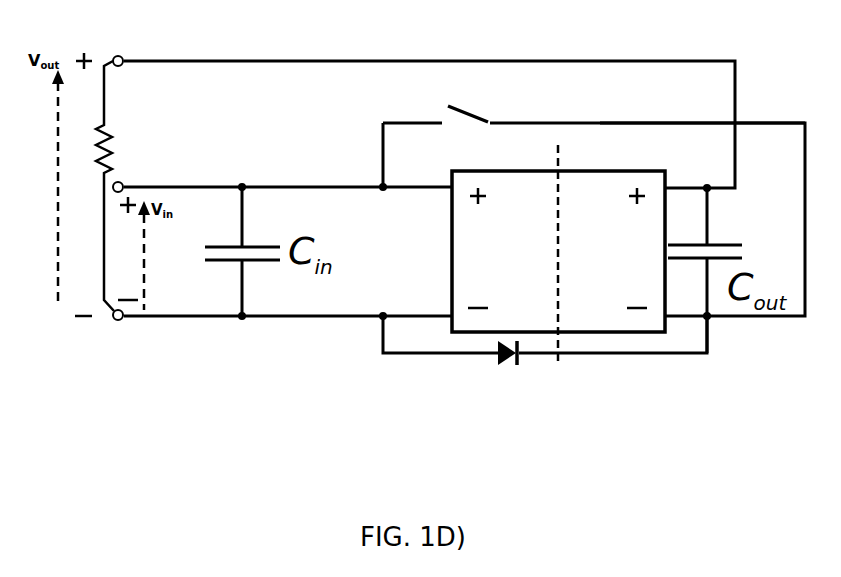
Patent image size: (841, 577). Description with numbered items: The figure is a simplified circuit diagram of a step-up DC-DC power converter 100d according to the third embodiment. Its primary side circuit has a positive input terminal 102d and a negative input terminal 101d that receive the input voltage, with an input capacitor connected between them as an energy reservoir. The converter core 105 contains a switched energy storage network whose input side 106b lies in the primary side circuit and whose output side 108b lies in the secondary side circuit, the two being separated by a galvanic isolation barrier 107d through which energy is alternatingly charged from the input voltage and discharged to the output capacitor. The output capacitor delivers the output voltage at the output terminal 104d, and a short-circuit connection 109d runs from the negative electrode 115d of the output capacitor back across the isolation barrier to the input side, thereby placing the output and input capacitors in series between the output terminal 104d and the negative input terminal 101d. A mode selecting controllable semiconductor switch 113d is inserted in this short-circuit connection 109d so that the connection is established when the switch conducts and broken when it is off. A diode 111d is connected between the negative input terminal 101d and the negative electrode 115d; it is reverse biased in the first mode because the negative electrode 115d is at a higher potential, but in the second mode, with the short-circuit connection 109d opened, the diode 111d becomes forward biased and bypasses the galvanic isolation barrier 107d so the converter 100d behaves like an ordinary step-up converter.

The step-up DC-DC power converter 100d is at (128, 372).
The negative input terminal 101d is at (122, 322).
The positive input terminal 102d is at (121, 181).
The output terminal 104d is at (114, 56).
The converter core 105 is at (615, 334).
The input side 106b is at (507, 248).
The output side 108b is at (612, 248).
The galvanic isolation barrier 107d is at (555, 370).
The short-circuit connection 109d is at (620, 122).
The diode 111d is at (498, 365).
The switch SW1 113d is at (434, 110).
The negative electrode 115d is at (712, 320).